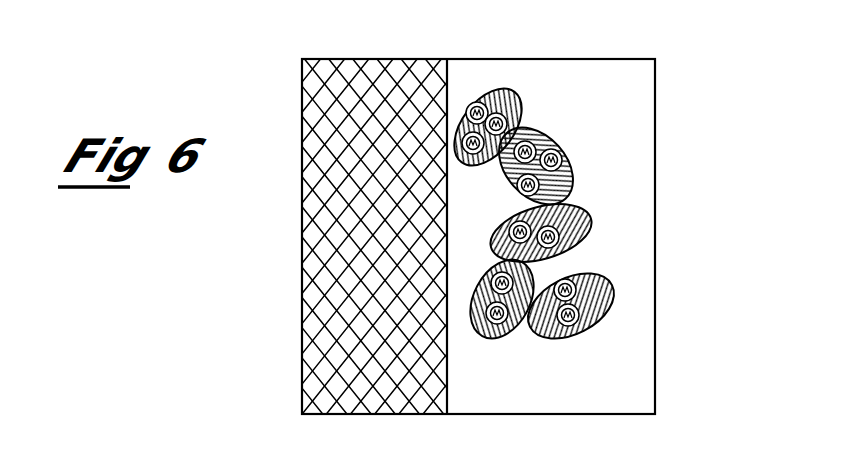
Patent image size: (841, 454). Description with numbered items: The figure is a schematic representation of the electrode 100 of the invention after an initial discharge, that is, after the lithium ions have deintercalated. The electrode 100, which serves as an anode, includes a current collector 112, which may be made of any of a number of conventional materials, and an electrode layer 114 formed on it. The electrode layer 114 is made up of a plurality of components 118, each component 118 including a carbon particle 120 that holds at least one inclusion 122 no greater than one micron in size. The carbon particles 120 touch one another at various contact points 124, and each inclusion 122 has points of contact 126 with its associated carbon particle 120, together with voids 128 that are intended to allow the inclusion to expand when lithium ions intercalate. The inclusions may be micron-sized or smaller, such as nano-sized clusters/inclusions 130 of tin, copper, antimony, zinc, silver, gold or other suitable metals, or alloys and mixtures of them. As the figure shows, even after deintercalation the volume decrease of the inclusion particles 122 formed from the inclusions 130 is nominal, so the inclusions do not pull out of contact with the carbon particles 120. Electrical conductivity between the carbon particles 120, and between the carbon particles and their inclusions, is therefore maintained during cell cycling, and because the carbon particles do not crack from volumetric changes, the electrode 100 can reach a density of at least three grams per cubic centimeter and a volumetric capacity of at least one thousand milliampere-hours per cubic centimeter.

The electrode 100 is at (284, 319).
The current collector 112 is at (301, 268).
The electrode layer 114 is at (657, 208).
The component 118 is at (573, 210).
The carbon particle 120 is at (478, 88).
The inclusion 122 is at (560, 132).
The contact point 124 is at (527, 123).
The point of contact 126 is at (475, 153).
The void 128 is at (508, 213).
The nano-sized cluster/inclusion 130 is at (578, 273).